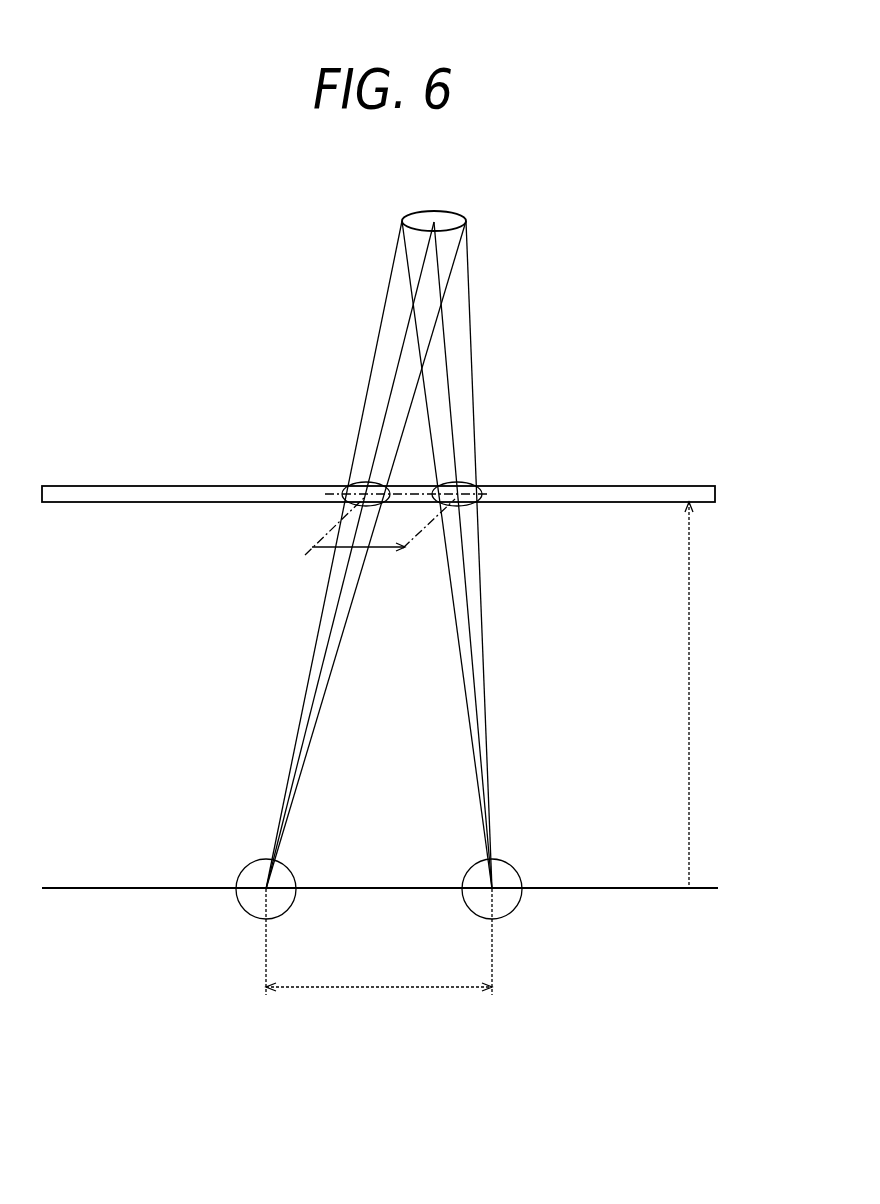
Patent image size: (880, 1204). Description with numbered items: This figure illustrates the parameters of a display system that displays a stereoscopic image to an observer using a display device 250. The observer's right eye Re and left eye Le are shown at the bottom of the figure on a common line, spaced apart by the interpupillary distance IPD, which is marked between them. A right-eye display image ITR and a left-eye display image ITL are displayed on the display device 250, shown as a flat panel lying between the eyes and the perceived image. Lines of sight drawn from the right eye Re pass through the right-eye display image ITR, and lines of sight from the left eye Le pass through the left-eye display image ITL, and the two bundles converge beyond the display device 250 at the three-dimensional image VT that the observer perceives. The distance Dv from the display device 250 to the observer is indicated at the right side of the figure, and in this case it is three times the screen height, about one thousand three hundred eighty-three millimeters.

The display device 250 is at (130, 486).
The 3D image VT is at (440, 211).
The left-eye display image ITL is at (360, 482).
The right-eye display image ITR is at (470, 482).
The left eye of the observer Le is at (237, 902).
The right eye of the observer Re is at (518, 902).
The distance from the display device to the observer Dv is at (709, 695).
The interpupillary distance IPD is at (379, 942).